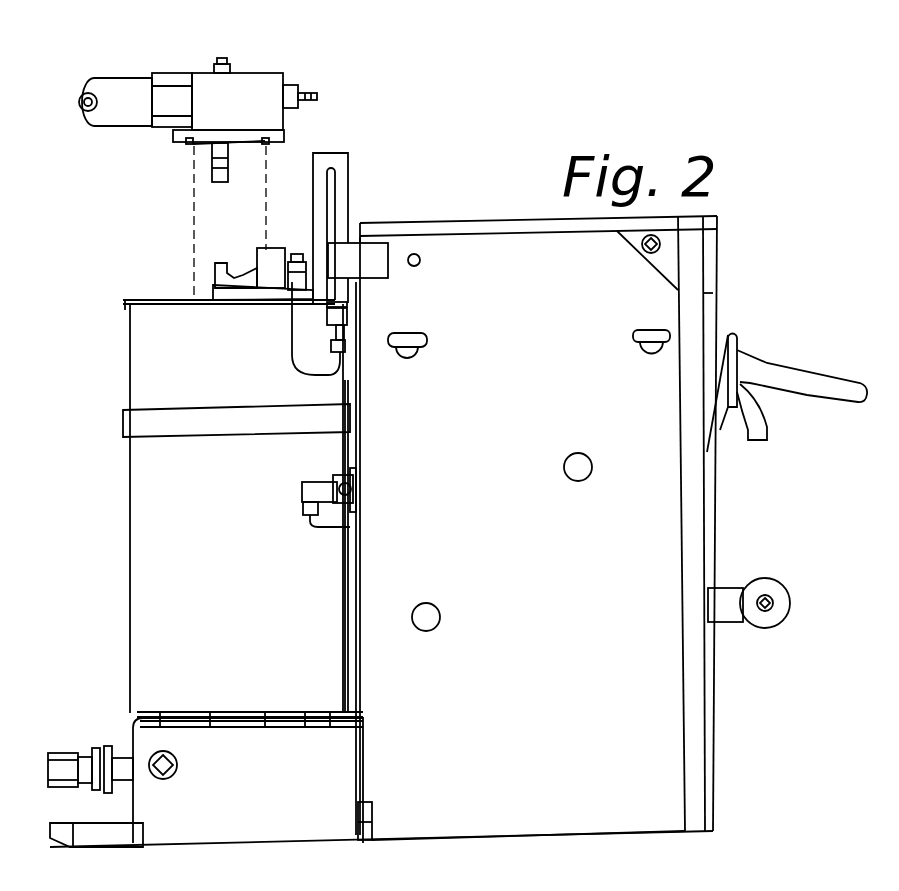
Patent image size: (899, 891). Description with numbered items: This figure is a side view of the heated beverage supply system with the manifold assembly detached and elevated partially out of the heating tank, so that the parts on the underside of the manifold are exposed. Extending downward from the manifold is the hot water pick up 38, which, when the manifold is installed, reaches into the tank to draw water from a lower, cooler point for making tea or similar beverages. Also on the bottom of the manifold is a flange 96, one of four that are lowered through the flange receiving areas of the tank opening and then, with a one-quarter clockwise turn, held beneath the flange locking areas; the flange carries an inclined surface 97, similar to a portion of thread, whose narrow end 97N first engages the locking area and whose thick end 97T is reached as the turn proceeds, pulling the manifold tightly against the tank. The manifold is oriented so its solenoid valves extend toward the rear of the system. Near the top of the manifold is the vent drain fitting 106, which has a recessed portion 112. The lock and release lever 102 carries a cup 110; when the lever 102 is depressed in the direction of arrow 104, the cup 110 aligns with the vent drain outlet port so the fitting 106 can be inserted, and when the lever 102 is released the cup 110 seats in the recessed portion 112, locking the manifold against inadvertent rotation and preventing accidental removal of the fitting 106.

The flange inclined surface 97 is at (208, 140).
The recessed portion of the vent drain fitting 112 is at (284, 88).
The vent drain fitting 106 is at (312, 96).
The thick end of the flange inclined surface 97T is at (186, 141).
The narrow end of the flange inclined surface 97N is at (269, 141).
The flange 96 is at (189, 146).
The hot water pick up 38 is at (213, 176).
The arrow 104 is at (276, 242).
The cup 110 is at (237, 257).
The lock and release lever 102 is at (228, 278).